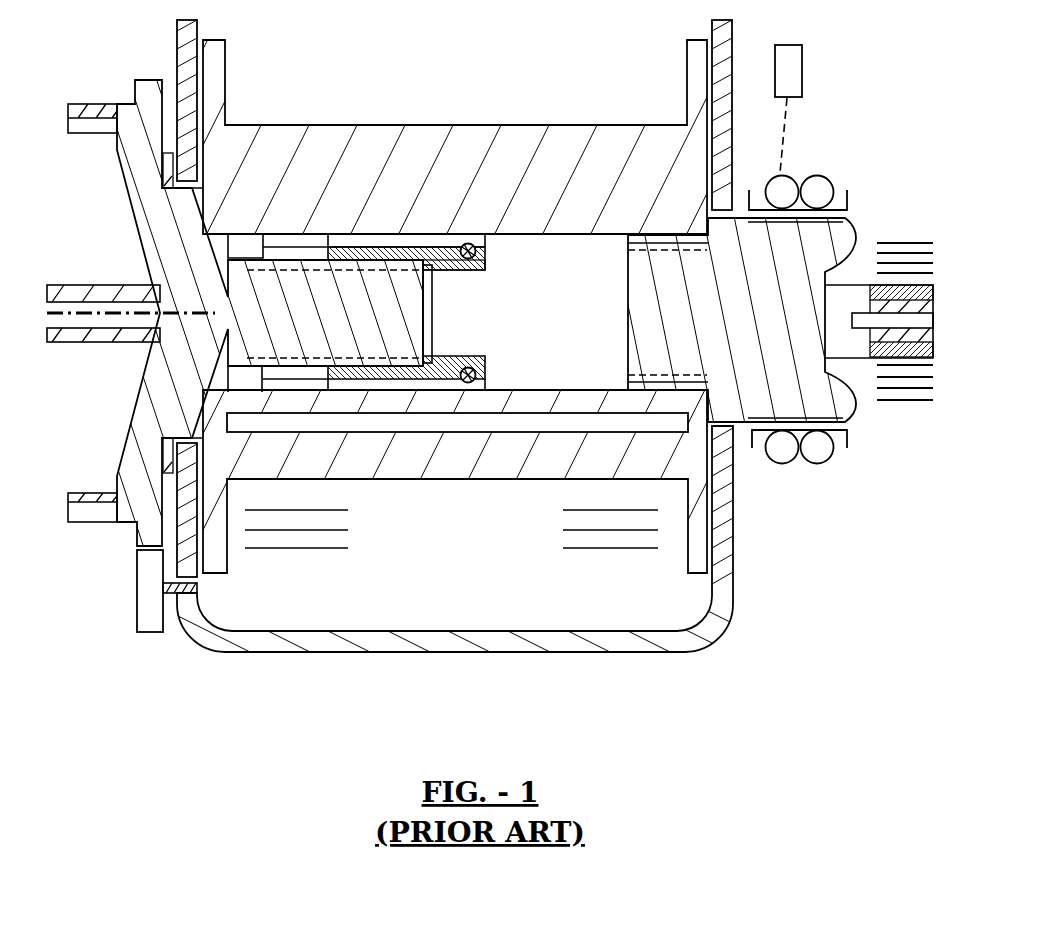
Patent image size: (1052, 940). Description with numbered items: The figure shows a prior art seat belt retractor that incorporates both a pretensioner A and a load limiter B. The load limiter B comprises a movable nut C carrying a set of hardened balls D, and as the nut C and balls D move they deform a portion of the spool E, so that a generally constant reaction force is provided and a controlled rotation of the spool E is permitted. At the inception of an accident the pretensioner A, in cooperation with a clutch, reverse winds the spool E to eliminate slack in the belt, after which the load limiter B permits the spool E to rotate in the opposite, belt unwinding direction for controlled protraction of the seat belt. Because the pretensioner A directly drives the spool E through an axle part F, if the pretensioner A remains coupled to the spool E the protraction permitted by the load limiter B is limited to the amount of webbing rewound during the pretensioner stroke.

The pretensioner A is at (797, 68).
The load limiter B is at (437, 260).
The movable nut C is at (397, 240).
The hardened balls D is at (481, 383).
The spool E is at (270, 155).
The axle part F is at (763, 320).